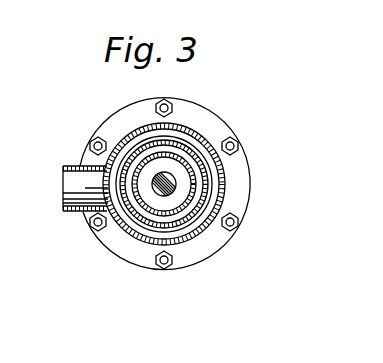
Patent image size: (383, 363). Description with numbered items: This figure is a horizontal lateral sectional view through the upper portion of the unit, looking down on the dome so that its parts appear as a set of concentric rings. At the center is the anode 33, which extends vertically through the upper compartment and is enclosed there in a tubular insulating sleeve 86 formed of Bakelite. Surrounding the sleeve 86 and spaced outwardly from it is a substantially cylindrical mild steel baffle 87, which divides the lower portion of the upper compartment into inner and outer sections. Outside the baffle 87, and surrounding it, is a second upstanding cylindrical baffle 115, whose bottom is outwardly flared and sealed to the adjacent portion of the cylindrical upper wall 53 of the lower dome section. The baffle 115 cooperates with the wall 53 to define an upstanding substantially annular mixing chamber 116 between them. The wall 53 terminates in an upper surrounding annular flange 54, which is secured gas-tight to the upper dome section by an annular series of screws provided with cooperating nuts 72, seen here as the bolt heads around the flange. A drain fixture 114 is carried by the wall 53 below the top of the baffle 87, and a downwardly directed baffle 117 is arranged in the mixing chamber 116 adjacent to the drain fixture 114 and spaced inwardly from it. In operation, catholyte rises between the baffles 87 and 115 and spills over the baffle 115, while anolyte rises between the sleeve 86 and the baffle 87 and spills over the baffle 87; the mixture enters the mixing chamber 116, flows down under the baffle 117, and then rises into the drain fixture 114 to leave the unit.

The anode 33 is at (175, 195).
The upper wall 53 is at (178, 147).
The upper annular flange 54 is at (236, 229).
The nuts 72 is at (166, 268).
The tubular insulating sleeve 86 is at (153, 195).
The baffle 87 is at (173, 153).
The drain fixture 114 is at (72, 188).
The baffle 115 is at (203, 174).
The mixing chamber 116 is at (213, 199).
The baffle 117 is at (107, 182).